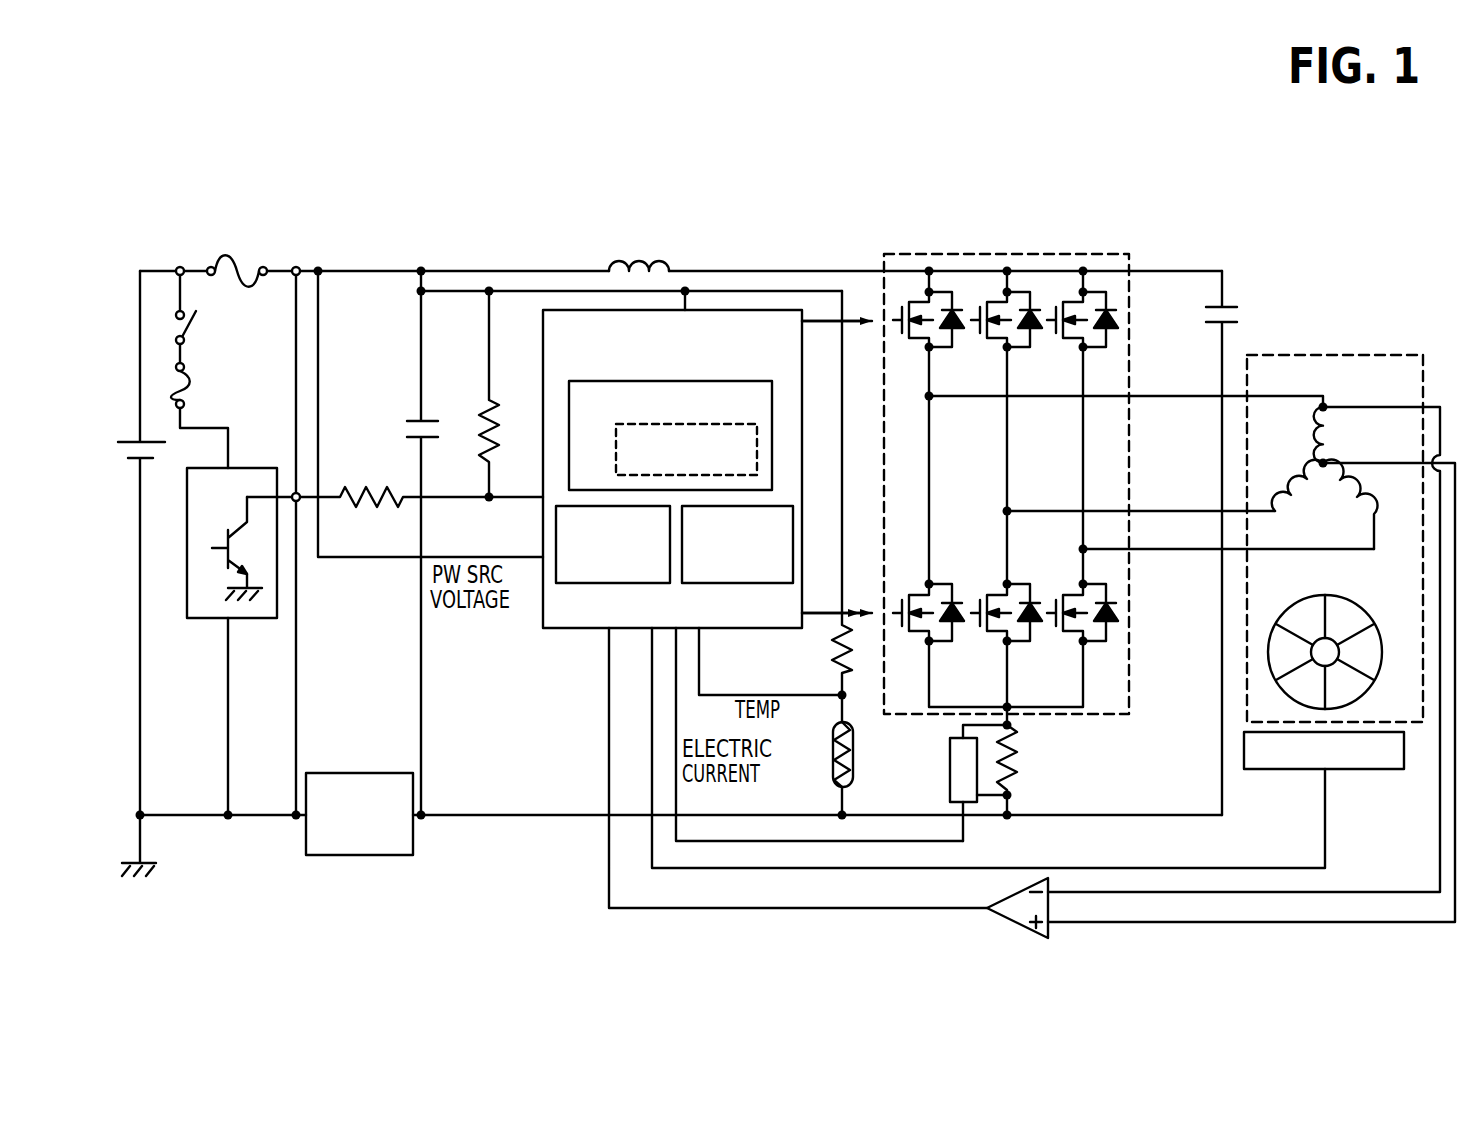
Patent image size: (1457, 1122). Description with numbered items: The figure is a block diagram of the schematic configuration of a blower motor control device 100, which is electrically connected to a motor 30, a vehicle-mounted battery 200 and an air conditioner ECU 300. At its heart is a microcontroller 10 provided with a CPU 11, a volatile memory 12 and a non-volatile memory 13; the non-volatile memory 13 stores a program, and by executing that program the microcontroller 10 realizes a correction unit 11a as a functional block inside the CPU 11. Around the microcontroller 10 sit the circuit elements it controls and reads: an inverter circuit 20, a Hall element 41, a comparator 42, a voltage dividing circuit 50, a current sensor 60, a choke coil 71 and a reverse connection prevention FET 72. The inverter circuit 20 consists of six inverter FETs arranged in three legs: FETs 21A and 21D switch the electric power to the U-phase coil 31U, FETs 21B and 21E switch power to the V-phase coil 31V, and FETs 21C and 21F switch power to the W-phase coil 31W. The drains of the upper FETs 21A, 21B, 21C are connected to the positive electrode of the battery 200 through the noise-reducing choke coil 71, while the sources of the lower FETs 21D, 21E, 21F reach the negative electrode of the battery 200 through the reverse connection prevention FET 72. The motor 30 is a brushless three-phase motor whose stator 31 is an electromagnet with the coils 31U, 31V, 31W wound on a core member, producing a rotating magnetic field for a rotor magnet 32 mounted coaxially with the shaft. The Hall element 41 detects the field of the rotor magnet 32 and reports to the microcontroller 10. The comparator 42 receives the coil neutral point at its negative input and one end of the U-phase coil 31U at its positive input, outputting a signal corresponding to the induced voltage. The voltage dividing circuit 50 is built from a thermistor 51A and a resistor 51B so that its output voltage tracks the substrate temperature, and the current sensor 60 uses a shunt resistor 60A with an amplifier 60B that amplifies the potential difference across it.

The blower motor control device 100 is at (1230, 177).
The battery 200 is at (125, 440).
The air conditioner ECU 300 is at (245, 468).
The microcontroller 10 is at (693, 464).
The CPU 11 is at (748, 381).
The correction unit 11a is at (712, 423).
The volatile memory 12 is at (590, 583).
The non-volatile memory 13 is at (727, 583).
The inverter circuit 20 is at (1036, 454).
The inverter FET 21A is at (958, 337).
The inverter FET 21B is at (1036, 337).
The inverter FET 21C is at (1119, 337).
The inverter FET 21D is at (958, 630).
The inverter FET 21E is at (1036, 630).
The inverter FET 21F is at (1119, 631).
The motor 30 is at (1335, 509).
The stator 31 is at (1345, 454).
The U-phase coil 31U is at (1328, 424).
The V-phase coil 31V is at (1305, 484).
The W-phase coil 31W is at (1358, 480).
The rotor magnet 32 is at (1352, 603).
The Hall element 41 is at (1352, 770).
The comparator 42 is at (1012, 922).
The voltage dividing circuit 50 is at (854, 553).
The thermistor 51A is at (853, 752).
The resistor 51B is at (853, 668).
The current sensor 60 is at (1051, 774).
The shunt resistor 60A is at (1020, 748).
The amplifier 60B is at (977, 778).
The choke coil 71 is at (645, 252).
The reverse connection prevention FET 72 is at (357, 773).